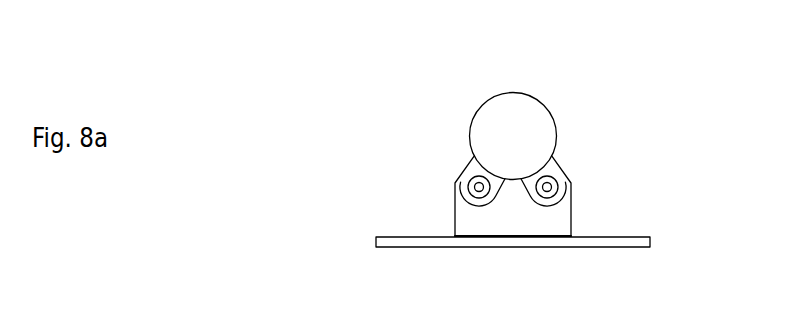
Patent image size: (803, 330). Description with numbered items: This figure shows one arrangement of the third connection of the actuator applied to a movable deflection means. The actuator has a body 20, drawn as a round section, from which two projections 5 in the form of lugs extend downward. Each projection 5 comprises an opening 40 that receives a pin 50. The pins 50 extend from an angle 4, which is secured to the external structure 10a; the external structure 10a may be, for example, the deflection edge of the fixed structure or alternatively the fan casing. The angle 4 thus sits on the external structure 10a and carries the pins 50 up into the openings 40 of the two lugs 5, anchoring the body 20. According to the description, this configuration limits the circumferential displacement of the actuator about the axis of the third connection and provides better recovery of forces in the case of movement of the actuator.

The angle 4 is at (443, 216).
The projection 5 is at (501, 131).
The external structure 10a is at (415, 240).
The body 20 is at (505, 113).
The opening 40 is at (467, 180).
The pin 50 is at (563, 165).